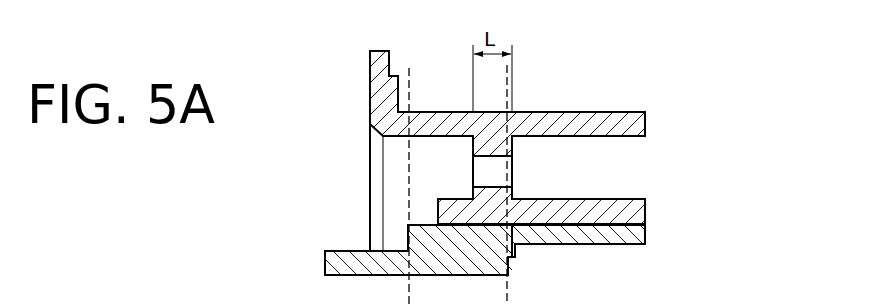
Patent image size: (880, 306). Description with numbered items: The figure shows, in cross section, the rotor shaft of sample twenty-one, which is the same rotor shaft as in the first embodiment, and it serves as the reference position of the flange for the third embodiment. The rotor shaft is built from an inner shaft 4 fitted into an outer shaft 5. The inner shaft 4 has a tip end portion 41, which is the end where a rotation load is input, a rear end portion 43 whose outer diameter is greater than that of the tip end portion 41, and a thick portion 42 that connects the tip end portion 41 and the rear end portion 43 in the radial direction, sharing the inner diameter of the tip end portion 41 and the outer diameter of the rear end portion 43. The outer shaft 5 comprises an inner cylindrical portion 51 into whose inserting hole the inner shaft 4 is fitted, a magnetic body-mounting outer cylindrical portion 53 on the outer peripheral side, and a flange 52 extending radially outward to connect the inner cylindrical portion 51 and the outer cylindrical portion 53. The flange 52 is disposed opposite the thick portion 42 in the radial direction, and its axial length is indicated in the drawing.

The inner shaft 4 is at (343, 251).
The tip end portion 41 is at (397, 262).
The thick portion 42 is at (428, 237).
The rear end portion 43 is at (608, 230).
The outer shaft 5 is at (365, 98).
The inner cylindrical portion 51 is at (558, 210).
The flange 52 is at (492, 143).
The magnetic body-mounting outer cylindrical portion 53 is at (620, 130).